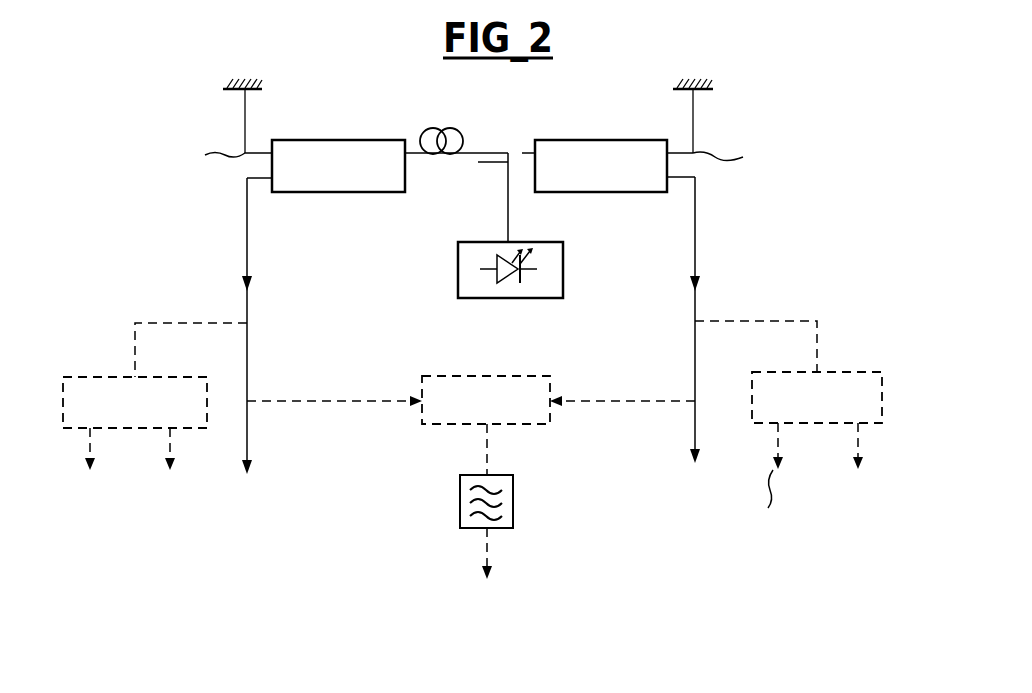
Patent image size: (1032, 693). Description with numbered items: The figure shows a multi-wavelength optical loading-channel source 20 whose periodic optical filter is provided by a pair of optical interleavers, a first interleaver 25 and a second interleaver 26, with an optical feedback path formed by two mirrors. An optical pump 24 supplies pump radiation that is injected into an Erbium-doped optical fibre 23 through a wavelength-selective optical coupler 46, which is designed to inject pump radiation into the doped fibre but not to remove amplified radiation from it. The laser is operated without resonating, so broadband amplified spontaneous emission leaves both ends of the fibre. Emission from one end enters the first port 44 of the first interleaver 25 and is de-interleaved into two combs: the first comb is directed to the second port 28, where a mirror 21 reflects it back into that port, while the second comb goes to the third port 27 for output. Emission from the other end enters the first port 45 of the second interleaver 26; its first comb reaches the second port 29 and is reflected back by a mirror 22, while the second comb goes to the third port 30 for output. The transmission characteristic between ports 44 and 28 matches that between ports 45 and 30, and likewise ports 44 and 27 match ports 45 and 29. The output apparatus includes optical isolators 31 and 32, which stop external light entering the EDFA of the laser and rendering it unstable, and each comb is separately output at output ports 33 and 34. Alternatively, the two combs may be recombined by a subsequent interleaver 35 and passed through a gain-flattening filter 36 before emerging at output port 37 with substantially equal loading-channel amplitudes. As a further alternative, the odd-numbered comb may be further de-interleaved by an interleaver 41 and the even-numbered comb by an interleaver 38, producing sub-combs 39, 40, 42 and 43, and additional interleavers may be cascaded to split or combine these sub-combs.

The loading-channel source 20 is at (632, 50).
The mirror 21 is at (208, 80).
The mirror 22 is at (730, 82).
The Erbium-doped optical fibre 23 is at (466, 133).
The optical pump 24 is at (563, 272).
The first interleaver 25 is at (348, 192).
The second interleaver 26 is at (605, 192).
The third port of the first interleaver 27 is at (260, 190).
The second port of the first interleaver 28 is at (221, 159).
The second port of the second interleaver 29 is at (719, 161).
The third port of the second interleaver 30 is at (683, 179).
The optical isolator 31 is at (245, 279).
The optical isolator 32 is at (698, 282).
The output port 33 is at (252, 466).
The output port 34 is at (695, 452).
The subsequent interleaver 35 is at (448, 376).
The gain-flattening filter 36 is at (460, 500).
The output port 37 is at (496, 576).
The interleaver 38 is at (858, 372).
The sub-comb 39 is at (766, 508).
The sub-comb 40 is at (864, 470).
The interleaver 41 is at (92, 377).
The sub-comb 42 is at (88, 472).
The sub-comb 43 is at (174, 470).
The first port of the first interleaver 44 is at (413, 157).
The first port of the second interleaver 45 is at (522, 148).
The wavelength-selective optical coupler 46 is at (487, 165).